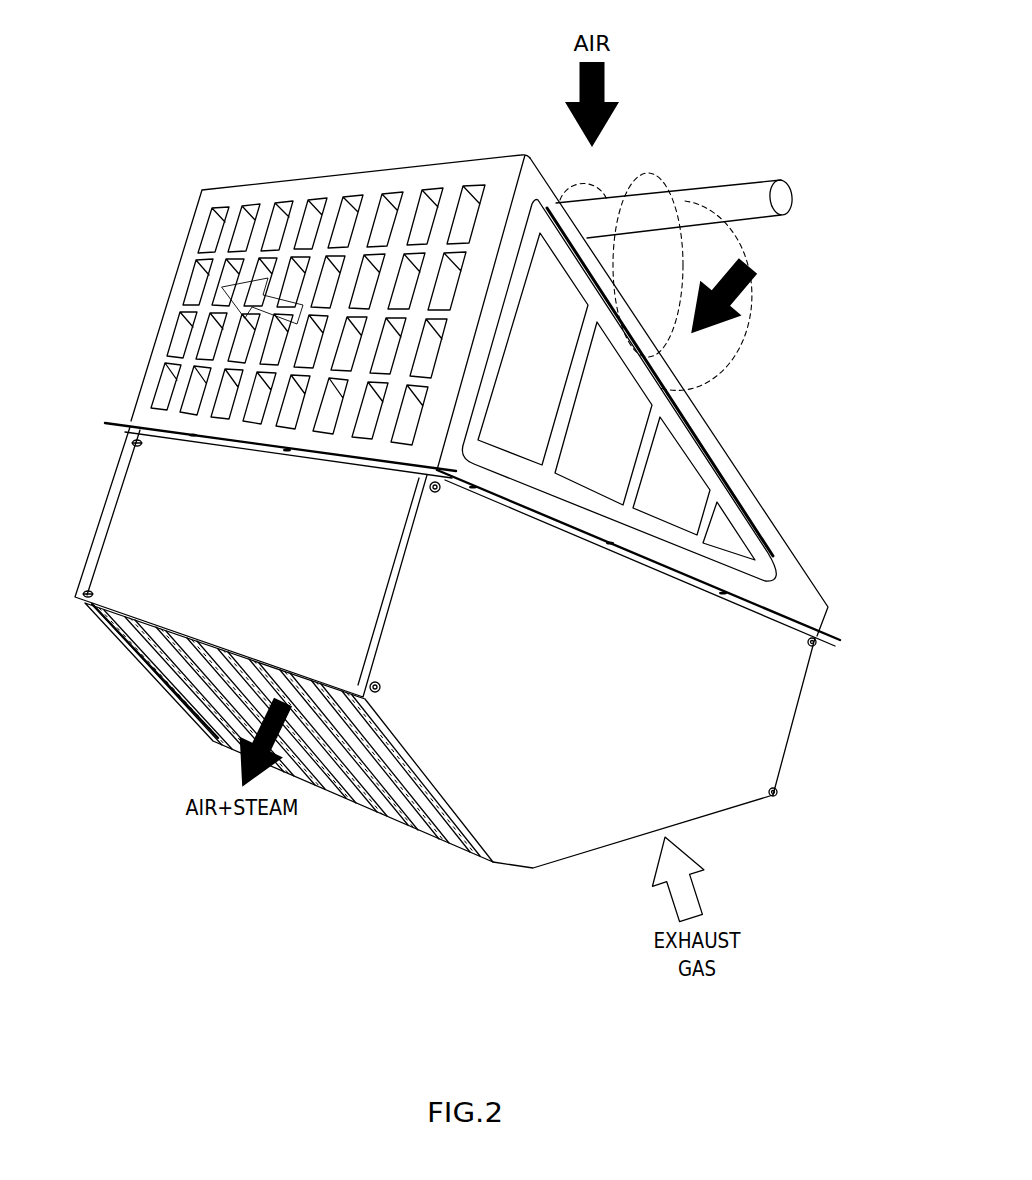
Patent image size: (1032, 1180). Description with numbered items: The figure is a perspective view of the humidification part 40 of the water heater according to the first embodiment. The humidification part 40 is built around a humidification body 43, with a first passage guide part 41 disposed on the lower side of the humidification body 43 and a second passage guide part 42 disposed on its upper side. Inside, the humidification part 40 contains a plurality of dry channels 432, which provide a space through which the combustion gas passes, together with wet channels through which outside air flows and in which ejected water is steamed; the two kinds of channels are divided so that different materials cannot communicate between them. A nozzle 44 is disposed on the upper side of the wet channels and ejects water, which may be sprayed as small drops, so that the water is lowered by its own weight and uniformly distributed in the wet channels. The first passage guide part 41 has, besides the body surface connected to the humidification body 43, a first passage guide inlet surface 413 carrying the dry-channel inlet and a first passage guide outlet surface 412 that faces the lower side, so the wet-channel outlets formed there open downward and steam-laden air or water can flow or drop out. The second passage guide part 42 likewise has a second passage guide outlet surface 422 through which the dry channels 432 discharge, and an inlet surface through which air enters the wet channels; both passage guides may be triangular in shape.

The humidification part 40 is at (475, 523).
The first passage guide part 41 is at (748, 815).
The first passage guide outlet surface 412 is at (123, 655).
The first passage guide inlet surface 413 is at (158, 687).
The second passage guide part 42 is at (651, 367).
The second passage guide outlet surface 422 is at (498, 178).
The humidification body 43 is at (812, 690).
The dry channels 432 is at (385, 213).
The nozzle 44 is at (800, 178).